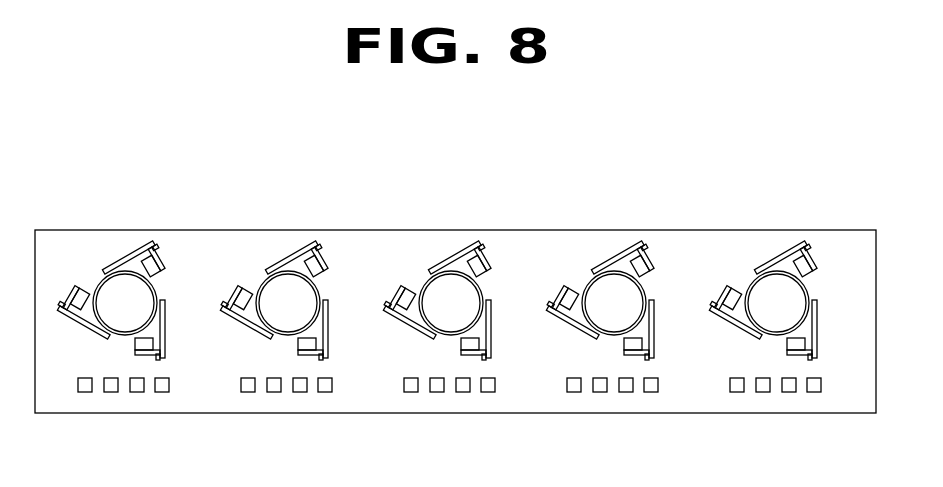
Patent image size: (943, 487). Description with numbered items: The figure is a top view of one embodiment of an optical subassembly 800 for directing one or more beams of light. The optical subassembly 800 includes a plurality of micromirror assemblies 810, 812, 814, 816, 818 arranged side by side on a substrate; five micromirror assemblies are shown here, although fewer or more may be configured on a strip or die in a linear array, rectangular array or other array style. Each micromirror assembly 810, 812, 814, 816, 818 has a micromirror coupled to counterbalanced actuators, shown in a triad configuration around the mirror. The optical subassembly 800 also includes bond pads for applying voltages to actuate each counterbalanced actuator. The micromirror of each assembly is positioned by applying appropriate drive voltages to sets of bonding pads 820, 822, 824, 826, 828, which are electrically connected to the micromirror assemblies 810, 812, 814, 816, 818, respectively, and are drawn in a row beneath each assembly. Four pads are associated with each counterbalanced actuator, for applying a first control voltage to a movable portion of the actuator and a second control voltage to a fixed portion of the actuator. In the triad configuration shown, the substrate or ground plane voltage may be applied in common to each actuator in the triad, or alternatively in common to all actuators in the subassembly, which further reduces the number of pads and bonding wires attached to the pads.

The optical subassembly 800 is at (97, 121).
The micromirror assembly 810 is at (109, 252).
The micromirror assembly 812 is at (272, 252).
The micromirror assembly 814 is at (435, 252).
The micromirror assembly 816 is at (598, 252).
The micromirror assembly 818 is at (761, 252).
The set of bonding pads 820 is at (120, 392).
The set of bonding pads 822 is at (283, 392).
The set of bonding pads 824 is at (446, 392).
The set of bonding pads 826 is at (609, 392).
The set of bonding pads 828 is at (772, 392).